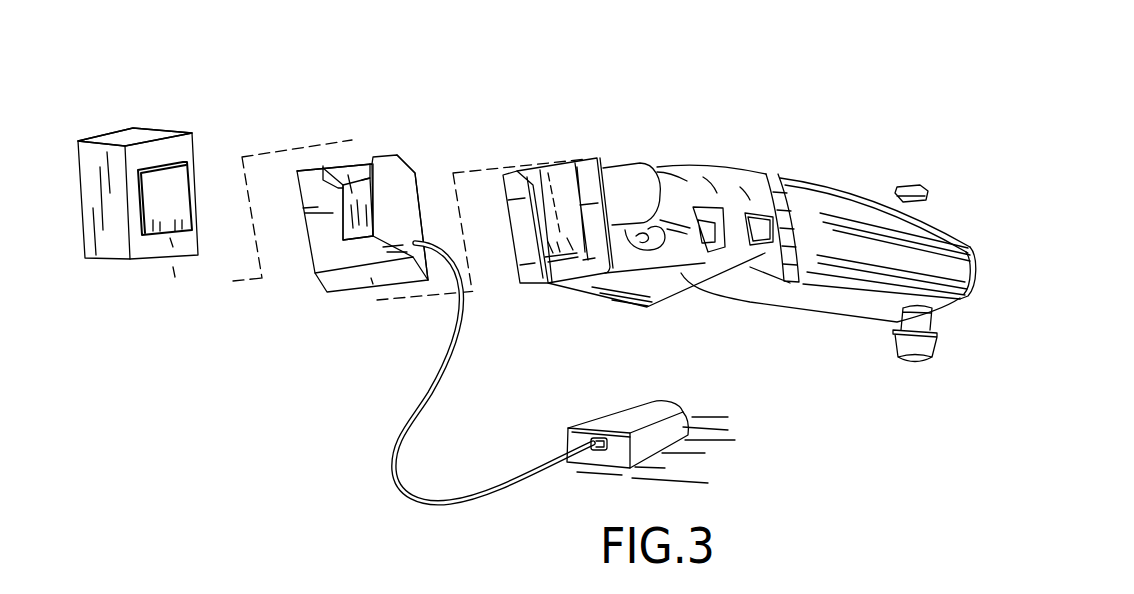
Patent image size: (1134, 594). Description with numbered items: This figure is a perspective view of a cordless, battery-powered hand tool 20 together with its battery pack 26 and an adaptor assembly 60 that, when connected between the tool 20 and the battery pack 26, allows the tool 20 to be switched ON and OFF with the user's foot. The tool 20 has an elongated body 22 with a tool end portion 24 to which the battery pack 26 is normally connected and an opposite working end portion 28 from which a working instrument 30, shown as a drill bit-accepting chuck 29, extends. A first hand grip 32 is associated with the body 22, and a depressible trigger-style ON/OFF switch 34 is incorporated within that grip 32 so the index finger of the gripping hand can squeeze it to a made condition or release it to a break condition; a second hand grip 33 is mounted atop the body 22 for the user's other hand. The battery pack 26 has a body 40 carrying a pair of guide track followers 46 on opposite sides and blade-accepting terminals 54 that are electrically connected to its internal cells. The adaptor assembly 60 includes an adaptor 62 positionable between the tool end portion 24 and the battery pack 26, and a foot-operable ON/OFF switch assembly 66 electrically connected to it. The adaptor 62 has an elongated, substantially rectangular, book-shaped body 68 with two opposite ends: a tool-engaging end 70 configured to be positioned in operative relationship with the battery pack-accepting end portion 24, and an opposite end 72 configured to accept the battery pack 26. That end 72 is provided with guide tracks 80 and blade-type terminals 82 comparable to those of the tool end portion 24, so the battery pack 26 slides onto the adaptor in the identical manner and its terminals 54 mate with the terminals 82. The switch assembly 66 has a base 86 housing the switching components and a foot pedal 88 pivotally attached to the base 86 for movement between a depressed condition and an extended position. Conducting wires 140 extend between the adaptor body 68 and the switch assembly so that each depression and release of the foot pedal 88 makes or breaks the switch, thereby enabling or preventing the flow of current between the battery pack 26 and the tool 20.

The hand tool 20 is at (788, 256).
The tool body 22 is at (737, 172).
The tool end portion 24 is at (585, 158).
The battery pack 26 is at (130, 152).
The working end portion 28 is at (967, 297).
The drill bit-accepting chuck 29 is at (937, 353).
The working instrument 30 is at (900, 357).
The first hand grip 32 is at (615, 163).
The second hand grip 33 is at (907, 185).
The trigger-style ON/OFF switch 34 is at (638, 242).
The battery pack body 40 is at (115, 263).
The guide track followers 46 is at (135, 173).
The blade-accepting terminals 54 is at (182, 233).
The adaptor assembly 60 is at (339, 35).
The adaptor 62 is at (347, 200).
The foot-operable ON/OFF switch assembly 66 is at (639, 416).
The adaptor body 68 is at (380, 155).
The tool-engaging end 70 is at (418, 237).
The battery pack-engaging end 72 is at (317, 250).
The guide tracks 80 is at (353, 193).
The blade-type terminals 82 is at (350, 227).
The base 86 is at (688, 428).
The foot pedal 88 is at (607, 412).
The conducting wires 140 is at (421, 395).